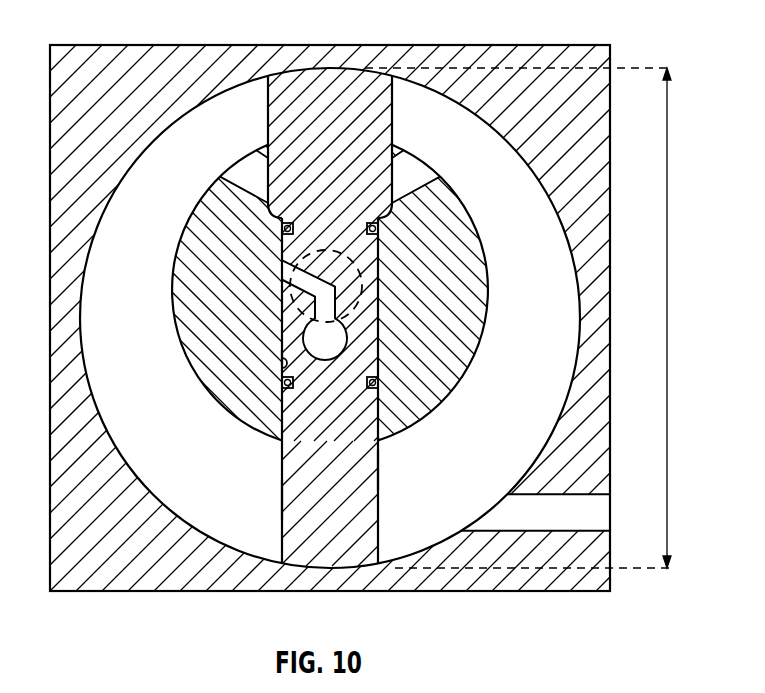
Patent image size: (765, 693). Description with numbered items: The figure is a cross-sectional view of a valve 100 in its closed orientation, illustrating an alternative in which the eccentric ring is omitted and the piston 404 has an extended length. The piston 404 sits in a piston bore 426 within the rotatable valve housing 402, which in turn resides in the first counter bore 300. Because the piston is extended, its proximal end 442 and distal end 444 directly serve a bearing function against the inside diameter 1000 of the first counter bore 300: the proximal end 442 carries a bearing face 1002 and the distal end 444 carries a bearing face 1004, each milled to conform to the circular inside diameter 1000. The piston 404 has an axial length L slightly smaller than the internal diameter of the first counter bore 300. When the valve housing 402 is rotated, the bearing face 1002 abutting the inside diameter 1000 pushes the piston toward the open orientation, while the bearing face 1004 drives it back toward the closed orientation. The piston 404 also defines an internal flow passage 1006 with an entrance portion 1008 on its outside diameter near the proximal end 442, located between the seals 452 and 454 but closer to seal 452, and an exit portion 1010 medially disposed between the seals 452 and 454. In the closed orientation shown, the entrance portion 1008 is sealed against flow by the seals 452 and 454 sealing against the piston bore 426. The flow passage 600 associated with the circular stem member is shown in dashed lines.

The valve 100 is at (209, 596).
The first counter bore 300 is at (174, 204).
The inside diameter of the first counter bore 1000 is at (158, 137).
The bearing face 1002 is at (285, 71).
The bearing face 1004 is at (305, 567).
The internal flow passage 1006 is at (378, 293).
The valve housing 402 is at (452, 220).
The proximal end of the piston 442 is at (405, 173).
The entrance portion 1008 is at (292, 297).
The flow passage 600 is at (303, 337).
The seal 452 is at (282, 228).
The seal 454 is at (378, 383).
The exit portion 1010 is at (280, 357).
The piston bore 426 is at (282, 363).
The distal end of the piston 444 is at (282, 498).
The piston 404 is at (378, 463).
The axial length of the piston L is at (668, 285).